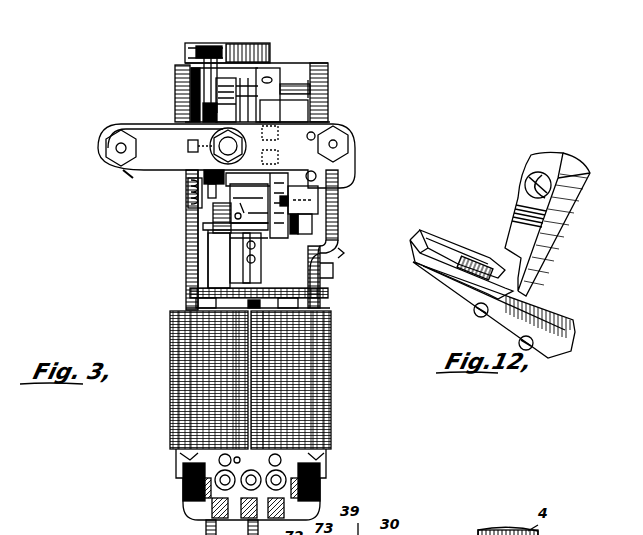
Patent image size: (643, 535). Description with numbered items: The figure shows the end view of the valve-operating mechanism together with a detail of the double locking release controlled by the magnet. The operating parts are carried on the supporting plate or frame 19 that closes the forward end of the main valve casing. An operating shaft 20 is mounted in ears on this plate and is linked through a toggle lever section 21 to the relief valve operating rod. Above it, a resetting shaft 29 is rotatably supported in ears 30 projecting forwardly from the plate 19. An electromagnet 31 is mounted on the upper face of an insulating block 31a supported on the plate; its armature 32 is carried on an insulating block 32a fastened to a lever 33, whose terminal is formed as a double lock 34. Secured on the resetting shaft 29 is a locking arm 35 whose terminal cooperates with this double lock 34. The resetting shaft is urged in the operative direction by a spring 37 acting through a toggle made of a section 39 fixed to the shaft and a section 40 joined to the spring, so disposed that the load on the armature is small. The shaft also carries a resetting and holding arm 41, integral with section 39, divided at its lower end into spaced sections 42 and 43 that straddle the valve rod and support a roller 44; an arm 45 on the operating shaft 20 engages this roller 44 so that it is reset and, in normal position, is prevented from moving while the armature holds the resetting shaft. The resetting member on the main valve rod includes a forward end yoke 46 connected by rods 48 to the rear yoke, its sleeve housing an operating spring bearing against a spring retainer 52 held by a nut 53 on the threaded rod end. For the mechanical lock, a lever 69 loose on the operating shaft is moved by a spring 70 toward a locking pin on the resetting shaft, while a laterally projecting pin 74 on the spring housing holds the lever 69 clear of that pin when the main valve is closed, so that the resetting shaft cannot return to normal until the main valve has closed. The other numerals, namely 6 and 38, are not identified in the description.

In FIG. 3, the toggle section 39 is at (222, 50).
In FIG. 3, the toggle section 40 is at (196, 55).
In FIG. 3, the ears 30 is at (168, 66).
In FIG. 3, the lever 69 is at (188, 100).
In FIG. 3, the resetting and holding arm 41 is at (222, 98).
In FIG. 3, the locking arm 35 is at (250, 99).
In FIG. 12, the locking arm 35 is at (530, 200).
In FIG. 3, the resetting shaft 29 is at (272, 80).
In FIG. 3, the supporting plate or frame 19 is at (278, 106).
In FIG. 3, the nut 53 is at (268, 124).
In FIG. 3, the section of resetting arm 43 is at (268, 148).
In FIG. 3, the forward end yoke 46 is at (120, 122).
In FIG. 3, the rods 48 is at (100, 136).
In FIG. 3, the roller 44 is at (308, 166).
In FIG. 3, the spring retainer 52 is at (206, 136).
In FIG. 3, the pin 6 is at (202, 146).
In FIG. 3, the laterally projecting pin 74 is at (118, 163).
In FIG. 3, the spring 37 is at (178, 242).
In FIG. 3, the section of resetting arm 42 is at (198, 168).
In FIG. 3, the spring 70 is at (182, 186).
In FIG. 3, the operating shaft 20 is at (310, 194).
In FIG. 3, the toggle lever section 21 is at (316, 211).
In FIG. 3, the arm 45 is at (219, 259).
In FIG. 3, the double lock 34 is at (238, 251).
In FIG. 12, the double lock 34 is at (408, 230).
In FIG. 3, the lever 33 is at (248, 264).
In FIG. 12, the lever 33 is at (548, 306).
In FIG. 3, the armature 32 is at (312, 290).
In FIG. 3, the insulating block 32a is at (210, 303).
In FIG. 3, the electromagnet 31 is at (162, 396).
In FIG. 3, the insulating block 31a is at (172, 475).
In FIG. 3, the prongs 38 is at (194, 513).